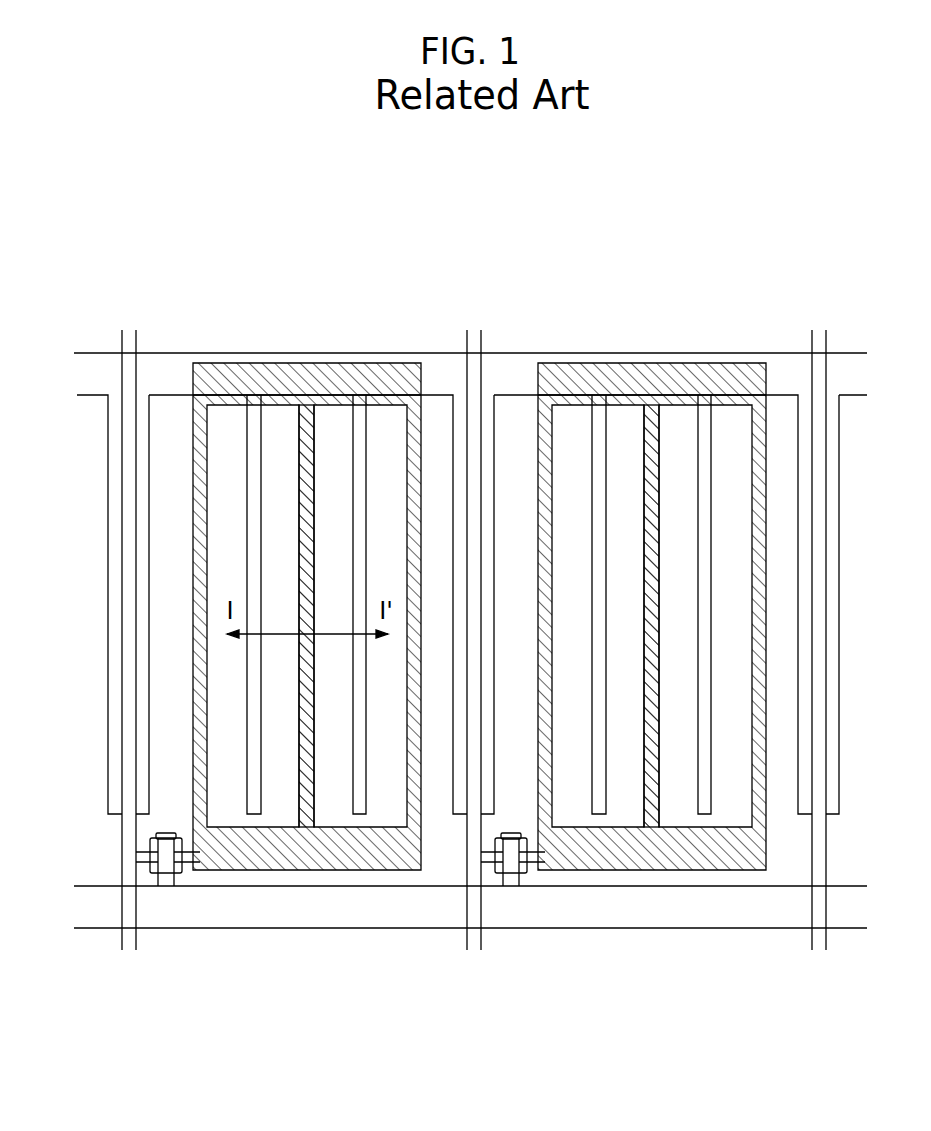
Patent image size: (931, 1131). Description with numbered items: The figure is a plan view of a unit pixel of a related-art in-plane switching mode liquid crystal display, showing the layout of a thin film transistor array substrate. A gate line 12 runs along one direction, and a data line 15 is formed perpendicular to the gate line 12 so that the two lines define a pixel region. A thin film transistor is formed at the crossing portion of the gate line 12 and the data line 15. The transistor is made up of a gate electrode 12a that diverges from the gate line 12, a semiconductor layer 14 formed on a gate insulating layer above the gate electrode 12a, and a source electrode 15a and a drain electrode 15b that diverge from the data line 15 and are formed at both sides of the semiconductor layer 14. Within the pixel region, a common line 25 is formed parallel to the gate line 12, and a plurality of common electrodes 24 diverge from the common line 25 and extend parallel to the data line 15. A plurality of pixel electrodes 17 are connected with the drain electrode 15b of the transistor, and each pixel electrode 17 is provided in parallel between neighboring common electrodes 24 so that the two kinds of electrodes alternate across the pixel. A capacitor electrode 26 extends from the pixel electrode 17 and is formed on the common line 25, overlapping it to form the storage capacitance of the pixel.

The gate line 12 is at (313, 907).
The gate electrode 12a is at (165, 882).
The semiconductor layer 14 is at (155, 838).
The data line 15 is at (130, 720).
The source electrode 15a is at (157, 860).
The drain electrode 15b is at (188, 862).
The pixel electrode 17 is at (307, 552).
The common electrode 24 is at (252, 484).
The common line 25 is at (442, 371).
The capacitor electrode 26 is at (313, 367).